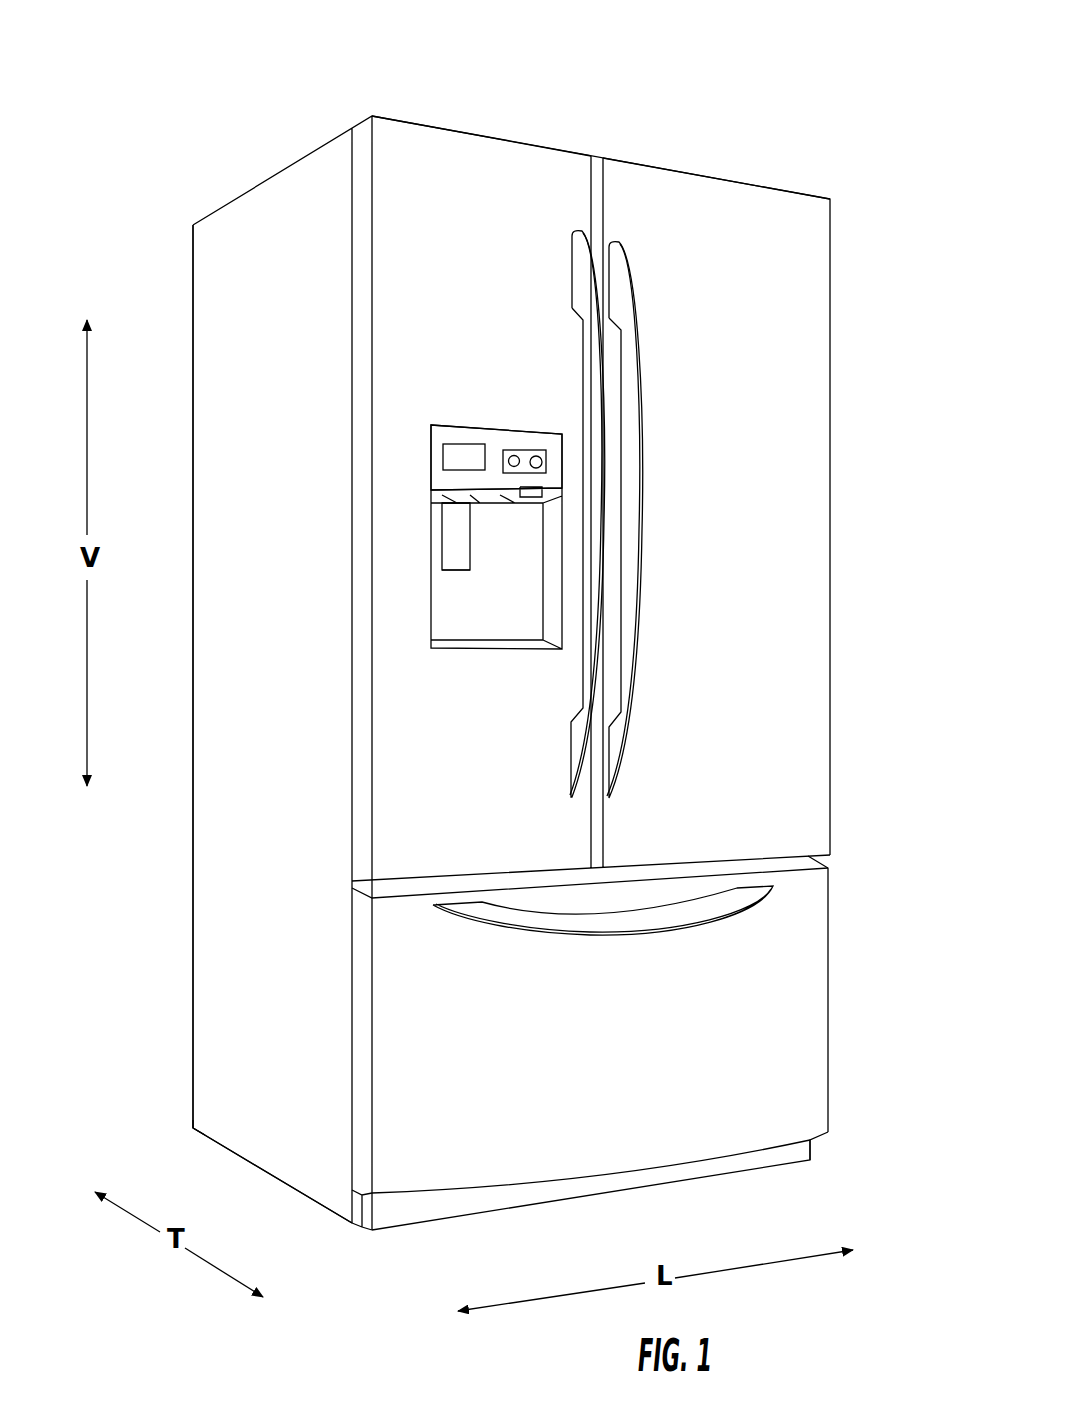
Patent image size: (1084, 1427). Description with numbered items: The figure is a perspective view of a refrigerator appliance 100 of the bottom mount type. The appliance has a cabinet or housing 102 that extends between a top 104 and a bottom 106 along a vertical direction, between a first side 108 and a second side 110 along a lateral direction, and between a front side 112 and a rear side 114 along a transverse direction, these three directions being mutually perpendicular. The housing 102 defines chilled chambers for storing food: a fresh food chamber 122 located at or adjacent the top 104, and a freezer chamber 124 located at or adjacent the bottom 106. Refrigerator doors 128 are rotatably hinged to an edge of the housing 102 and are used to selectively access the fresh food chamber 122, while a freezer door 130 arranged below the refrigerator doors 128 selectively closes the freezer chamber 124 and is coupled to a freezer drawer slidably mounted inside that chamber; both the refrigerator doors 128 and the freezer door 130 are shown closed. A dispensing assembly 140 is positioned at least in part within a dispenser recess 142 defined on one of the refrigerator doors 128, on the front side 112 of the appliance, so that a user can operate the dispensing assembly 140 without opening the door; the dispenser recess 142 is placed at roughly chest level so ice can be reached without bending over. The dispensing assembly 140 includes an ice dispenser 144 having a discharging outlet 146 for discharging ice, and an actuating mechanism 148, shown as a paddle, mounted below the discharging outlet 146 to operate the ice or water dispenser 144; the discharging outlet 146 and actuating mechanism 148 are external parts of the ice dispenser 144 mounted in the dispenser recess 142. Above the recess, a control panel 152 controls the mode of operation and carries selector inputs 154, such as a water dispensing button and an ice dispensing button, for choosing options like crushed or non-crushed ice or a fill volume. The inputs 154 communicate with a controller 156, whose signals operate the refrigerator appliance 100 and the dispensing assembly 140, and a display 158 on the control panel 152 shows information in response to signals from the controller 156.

The refrigerator appliance 100 is at (502, 672).
The cabinet or housing 102 is at (288, 203).
The top 104 is at (190, 226).
The bottom 106 is at (176, 1127).
The first side 108 is at (368, 1237).
The second side 110 is at (815, 1167).
The front side 112 is at (346, 1232).
The rear side 114 is at (191, 1134).
The fresh food chamber 122 is at (644, 498).
The freezer chamber 124 is at (644, 1030).
The refrigerator doors 128 is at (505, 270).
The freezer door 130 is at (645, 1037).
The dispensing assembly 140 is at (538, 514).
The dispenser recess 142 is at (497, 640).
The ice dispenser 144 is at (425, 571).
The discharging outlet 146 is at (452, 500).
The actuating mechanism 148 is at (460, 560).
The control panel 152 is at (538, 439).
The selector inputs 154 is at (515, 460).
The controller 156 is at (547, 461).
The display 158 is at (463, 460).